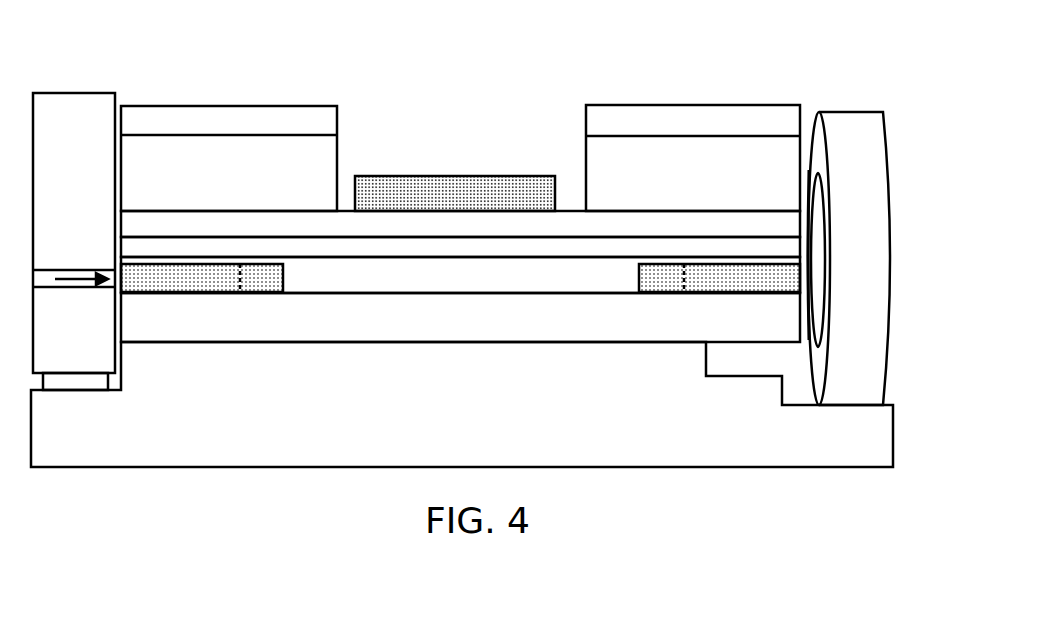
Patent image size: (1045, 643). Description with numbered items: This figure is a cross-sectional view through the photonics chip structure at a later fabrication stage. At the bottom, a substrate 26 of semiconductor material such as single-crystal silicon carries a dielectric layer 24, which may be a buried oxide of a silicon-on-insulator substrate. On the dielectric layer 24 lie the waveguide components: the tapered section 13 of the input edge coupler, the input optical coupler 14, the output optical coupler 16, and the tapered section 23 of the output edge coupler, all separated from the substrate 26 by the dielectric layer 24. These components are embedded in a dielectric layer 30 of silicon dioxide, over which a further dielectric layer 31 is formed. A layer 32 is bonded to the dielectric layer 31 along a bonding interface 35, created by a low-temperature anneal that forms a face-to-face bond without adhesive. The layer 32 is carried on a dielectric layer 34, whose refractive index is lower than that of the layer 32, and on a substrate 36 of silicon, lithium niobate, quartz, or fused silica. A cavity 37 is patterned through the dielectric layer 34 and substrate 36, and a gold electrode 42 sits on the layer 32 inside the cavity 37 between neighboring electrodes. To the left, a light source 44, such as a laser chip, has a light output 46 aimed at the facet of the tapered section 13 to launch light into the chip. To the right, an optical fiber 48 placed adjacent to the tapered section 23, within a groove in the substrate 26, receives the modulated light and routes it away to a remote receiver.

The tapered section 13 is at (175, 283).
The input optical coupler 14 is at (260, 282).
The output optical coupler 16 is at (657, 283).
The tapered section 23 is at (710, 283).
The dielectric layer 24 is at (348, 318).
The substrate 26 is at (812, 443).
The dielectric layer 30 is at (433, 278).
The dielectric layer 31 is at (487, 257).
The layer 32 is at (458, 227).
The dielectric layer 34 is at (237, 155).
The bonding interface 35 is at (640, 237).
The substrate 36 is at (207, 123).
The cavity 37 is at (403, 162).
The electrode 42 is at (430, 190).
The light source 44 is at (83, 110).
The light output 46 is at (67, 277).
The optical fiber 48 is at (847, 137).